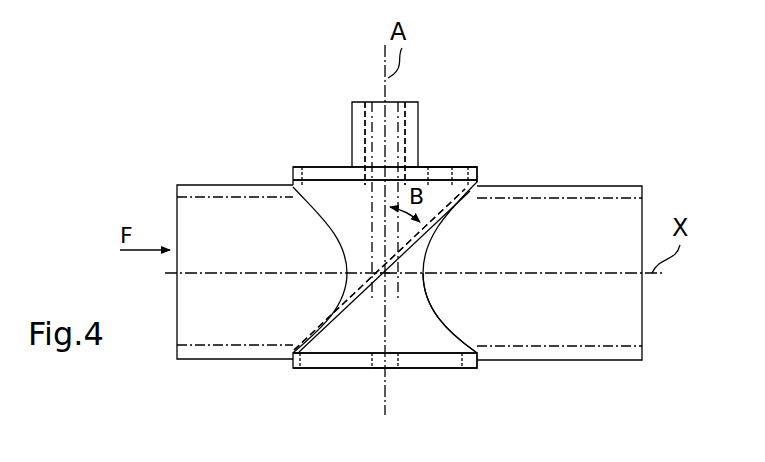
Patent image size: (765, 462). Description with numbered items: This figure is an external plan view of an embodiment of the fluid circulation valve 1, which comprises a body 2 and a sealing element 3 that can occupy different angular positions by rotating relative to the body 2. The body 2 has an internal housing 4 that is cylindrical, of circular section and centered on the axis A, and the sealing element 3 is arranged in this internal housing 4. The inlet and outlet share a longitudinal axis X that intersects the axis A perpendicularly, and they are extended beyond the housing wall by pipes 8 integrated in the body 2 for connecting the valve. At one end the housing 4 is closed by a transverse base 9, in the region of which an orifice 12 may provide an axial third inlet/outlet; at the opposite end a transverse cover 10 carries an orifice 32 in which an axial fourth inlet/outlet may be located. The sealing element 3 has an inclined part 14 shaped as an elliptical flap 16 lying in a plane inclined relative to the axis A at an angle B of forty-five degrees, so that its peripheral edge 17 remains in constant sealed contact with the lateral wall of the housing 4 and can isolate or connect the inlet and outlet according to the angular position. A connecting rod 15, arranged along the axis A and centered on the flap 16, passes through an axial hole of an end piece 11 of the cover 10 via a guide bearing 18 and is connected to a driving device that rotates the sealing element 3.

The fluid circulation valve 1 is at (527, 121).
The body 2 is at (288, 167).
The sealing element 3 is at (355, 212).
The internal housing 4 is at (438, 338).
The pipes 8 is at (192, 193).
The transverse base 9 is at (467, 340).
The transverse cover 10 is at (460, 177).
The end piece 11 is at (352, 127).
The orifice 12 is at (392, 371).
The inclined part 14 is at (393, 280).
The connecting rod 15 is at (390, 123).
The elliptical flap 16 is at (347, 323).
The peripheral edge 17 is at (305, 342).
The guide bearing 18 is at (368, 107).
The orifice 32 is at (443, 163).